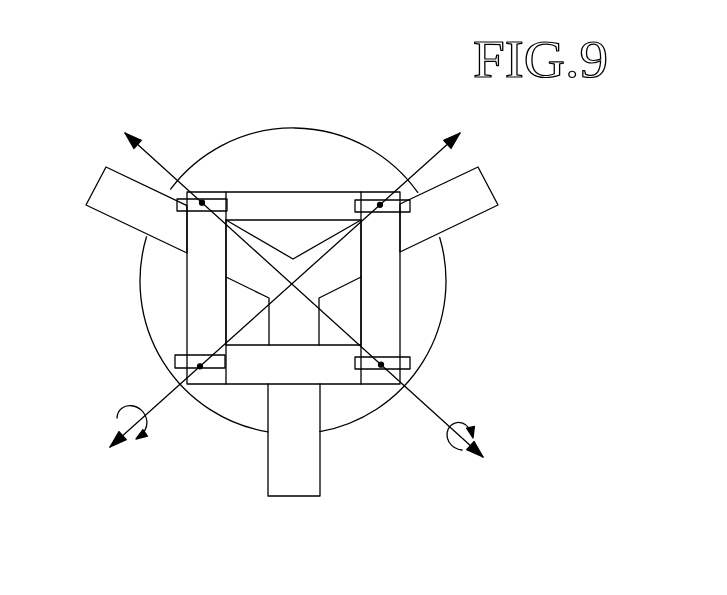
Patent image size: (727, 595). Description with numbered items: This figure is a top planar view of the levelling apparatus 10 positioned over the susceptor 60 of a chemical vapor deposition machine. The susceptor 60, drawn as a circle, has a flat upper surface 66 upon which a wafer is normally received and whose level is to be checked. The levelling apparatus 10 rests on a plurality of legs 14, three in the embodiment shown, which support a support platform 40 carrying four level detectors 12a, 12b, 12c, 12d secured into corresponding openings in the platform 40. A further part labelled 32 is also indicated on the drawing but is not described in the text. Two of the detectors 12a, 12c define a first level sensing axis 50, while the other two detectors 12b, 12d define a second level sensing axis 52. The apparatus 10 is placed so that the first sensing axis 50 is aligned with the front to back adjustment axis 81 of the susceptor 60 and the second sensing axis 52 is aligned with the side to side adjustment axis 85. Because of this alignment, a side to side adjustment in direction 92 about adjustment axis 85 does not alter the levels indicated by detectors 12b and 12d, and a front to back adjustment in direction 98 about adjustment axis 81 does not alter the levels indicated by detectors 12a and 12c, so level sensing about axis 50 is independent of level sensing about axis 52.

The levelling apparatus 10 is at (277, 288).
The level detector 12a is at (204, 202).
The level detector 12b is at (380, 204).
The level detector 12c is at (381, 368).
The level detector 12d is at (201, 367).
The leg 14 is at (290, 347).
The leg member 32 is at (460, 235).
The support platform 40 is at (402, 323).
The first level sensing axis 50 is at (304, 278).
The second level sensing axis 52 is at (287, 269).
The susceptor 60 is at (320, 131).
The upper surface 66 is at (310, 164).
The front to back adjustment axis 81 is at (133, 141).
The side to side adjustment axis 85 is at (432, 157).
The direction 92 is at (149, 429).
The direction 98 is at (470, 424).